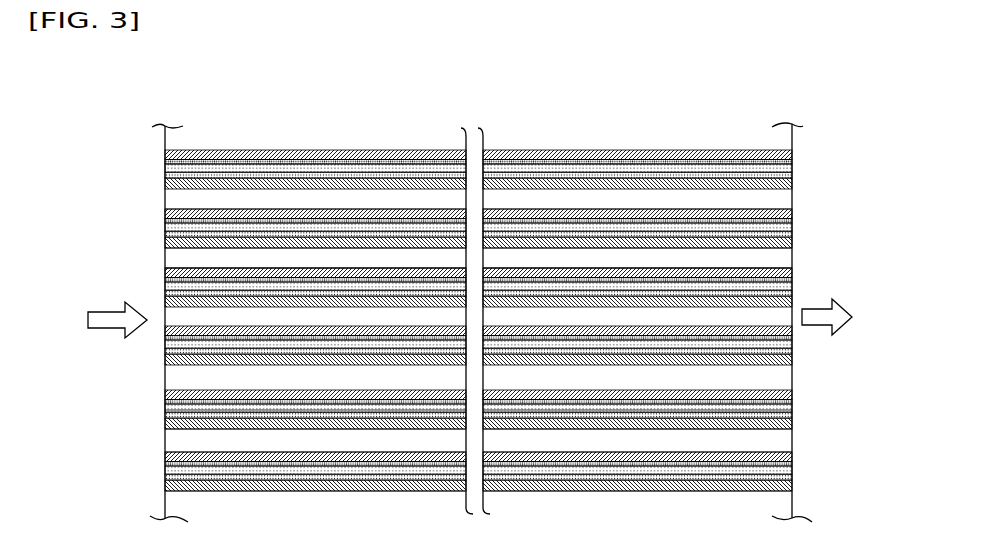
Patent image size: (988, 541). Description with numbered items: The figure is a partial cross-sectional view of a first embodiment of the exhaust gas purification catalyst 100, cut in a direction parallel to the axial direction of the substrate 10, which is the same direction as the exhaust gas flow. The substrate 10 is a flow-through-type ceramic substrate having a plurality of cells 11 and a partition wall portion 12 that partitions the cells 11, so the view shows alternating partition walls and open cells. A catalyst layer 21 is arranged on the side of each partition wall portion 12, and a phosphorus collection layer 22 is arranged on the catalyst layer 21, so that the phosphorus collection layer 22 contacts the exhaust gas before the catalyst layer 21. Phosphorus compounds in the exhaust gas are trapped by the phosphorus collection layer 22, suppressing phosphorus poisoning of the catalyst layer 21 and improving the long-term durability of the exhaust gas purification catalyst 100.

The exhaust gas purification catalyst 100 is at (473, 299).
The phosphorus collection layer 22 is at (165, 150).
The catalyst layer 21 is at (165, 162).
The partition wall portion 12 is at (165, 226).
The cells 11 is at (165, 255).
The substrate 10 is at (87, 210).